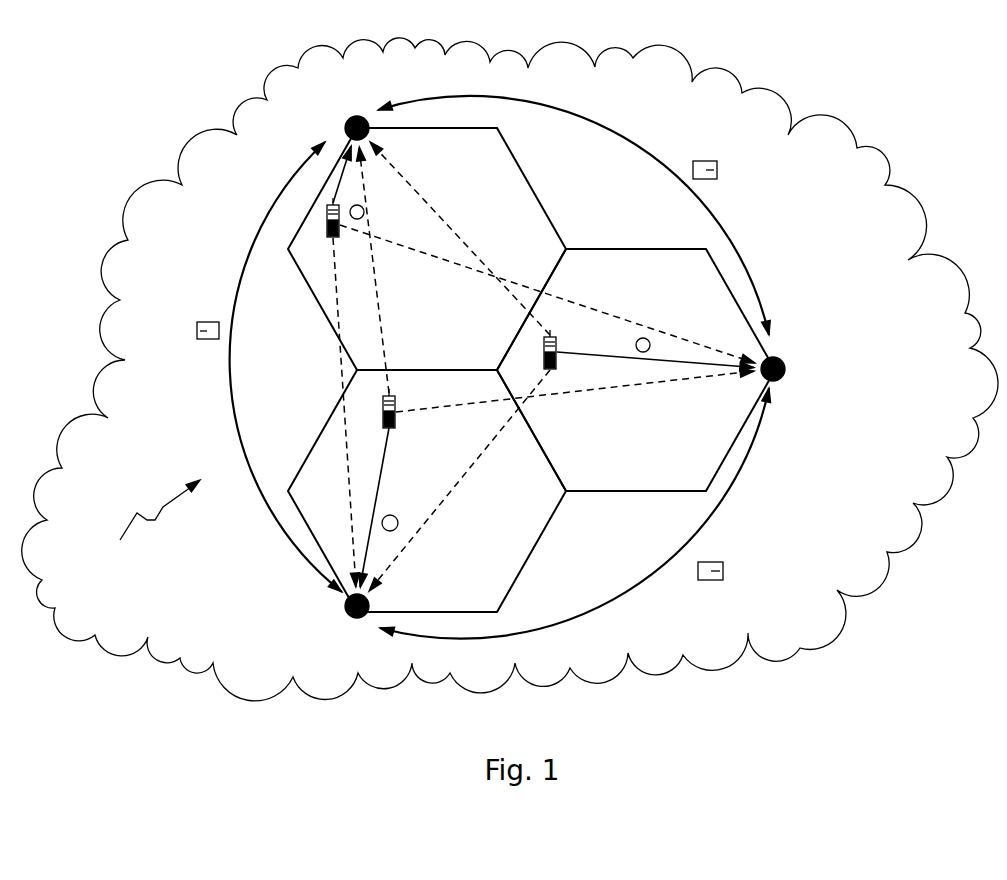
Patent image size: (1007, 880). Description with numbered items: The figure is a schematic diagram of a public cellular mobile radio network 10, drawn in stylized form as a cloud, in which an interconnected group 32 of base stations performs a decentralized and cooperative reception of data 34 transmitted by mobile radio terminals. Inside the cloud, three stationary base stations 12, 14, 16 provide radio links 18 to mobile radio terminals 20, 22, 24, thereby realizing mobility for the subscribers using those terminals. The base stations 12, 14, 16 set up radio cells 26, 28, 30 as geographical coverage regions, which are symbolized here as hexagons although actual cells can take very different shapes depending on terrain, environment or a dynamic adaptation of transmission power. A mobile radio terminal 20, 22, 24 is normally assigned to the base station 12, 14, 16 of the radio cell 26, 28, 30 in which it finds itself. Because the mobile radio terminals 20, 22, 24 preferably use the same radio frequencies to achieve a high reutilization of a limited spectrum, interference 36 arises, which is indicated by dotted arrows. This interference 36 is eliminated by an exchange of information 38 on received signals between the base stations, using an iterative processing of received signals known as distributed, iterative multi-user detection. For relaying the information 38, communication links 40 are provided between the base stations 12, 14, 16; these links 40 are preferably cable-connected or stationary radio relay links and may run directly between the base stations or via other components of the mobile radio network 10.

The mobile radio network 10 is at (208, 153).
The base station 12 is at (354, 116).
The base station 14 is at (787, 363).
The base station 16 is at (345, 605).
The radio link 18 is at (340, 175).
The mobile radio terminal 20 is at (328, 227).
The mobile radio terminal 22 is at (562, 352).
The mobile radio terminal 24 is at (397, 425).
The radio cell 26 is at (485, 165).
The radio cell 28 is at (603, 473).
The radio cell 30 is at (485, 555).
The interconnected group of base stations 32 is at (152, 521).
The data 34 is at (362, 207).
The interference 36 is at (515, 370).
The information on received signals 38 is at (200, 331).
The communication link 40 is at (585, 112).